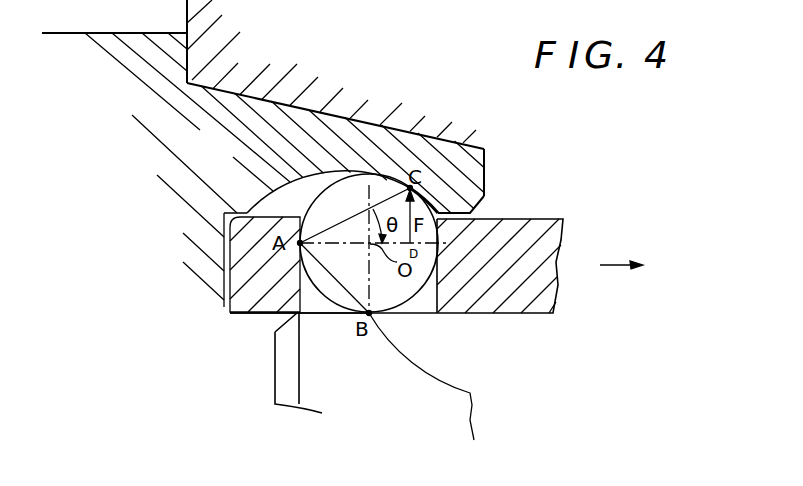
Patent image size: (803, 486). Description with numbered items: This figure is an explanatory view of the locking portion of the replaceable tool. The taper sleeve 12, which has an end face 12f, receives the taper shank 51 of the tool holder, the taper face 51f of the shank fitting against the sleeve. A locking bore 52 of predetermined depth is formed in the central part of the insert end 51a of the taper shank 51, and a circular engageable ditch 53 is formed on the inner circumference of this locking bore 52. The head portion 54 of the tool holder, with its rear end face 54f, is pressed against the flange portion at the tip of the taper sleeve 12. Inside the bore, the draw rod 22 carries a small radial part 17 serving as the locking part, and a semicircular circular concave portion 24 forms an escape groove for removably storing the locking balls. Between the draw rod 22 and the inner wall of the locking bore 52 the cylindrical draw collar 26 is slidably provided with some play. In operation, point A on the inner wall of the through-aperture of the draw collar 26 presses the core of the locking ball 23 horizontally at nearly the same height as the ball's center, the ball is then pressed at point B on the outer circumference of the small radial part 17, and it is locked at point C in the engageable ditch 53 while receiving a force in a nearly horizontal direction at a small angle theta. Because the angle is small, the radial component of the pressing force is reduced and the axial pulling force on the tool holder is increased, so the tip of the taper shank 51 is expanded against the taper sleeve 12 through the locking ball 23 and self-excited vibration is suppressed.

The head portion 54 is at (118, 173).
The end face 54f is at (187, 38).
The taper sleeve 12 is at (357, 77).
The end face 12f is at (185, 58).
The taper shank 51 is at (223, 157).
The insert end 51a is at (483, 166).
The taper face 51f is at (455, 142).
The locking bore 52 is at (228, 268).
The engageable ditch 53 is at (320, 178).
The locking ball 23 is at (390, 147).
The draw collar 26 is at (499, 296).
The draw rod 22 is at (275, 371).
The small radial part 17 is at (338, 314).
The circular concave portion 24 is at (422, 357).